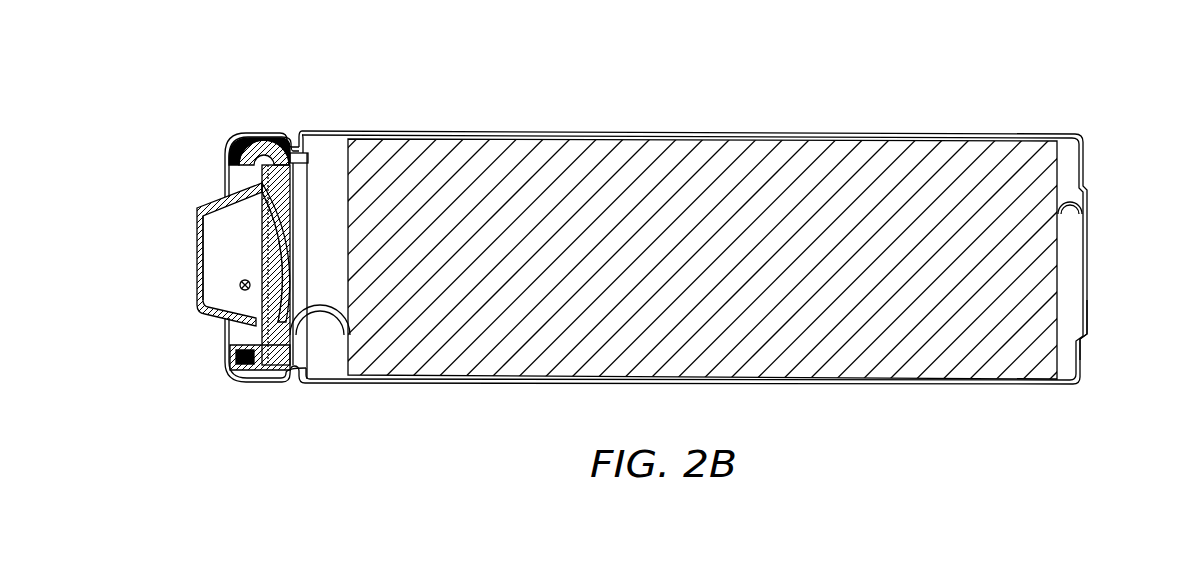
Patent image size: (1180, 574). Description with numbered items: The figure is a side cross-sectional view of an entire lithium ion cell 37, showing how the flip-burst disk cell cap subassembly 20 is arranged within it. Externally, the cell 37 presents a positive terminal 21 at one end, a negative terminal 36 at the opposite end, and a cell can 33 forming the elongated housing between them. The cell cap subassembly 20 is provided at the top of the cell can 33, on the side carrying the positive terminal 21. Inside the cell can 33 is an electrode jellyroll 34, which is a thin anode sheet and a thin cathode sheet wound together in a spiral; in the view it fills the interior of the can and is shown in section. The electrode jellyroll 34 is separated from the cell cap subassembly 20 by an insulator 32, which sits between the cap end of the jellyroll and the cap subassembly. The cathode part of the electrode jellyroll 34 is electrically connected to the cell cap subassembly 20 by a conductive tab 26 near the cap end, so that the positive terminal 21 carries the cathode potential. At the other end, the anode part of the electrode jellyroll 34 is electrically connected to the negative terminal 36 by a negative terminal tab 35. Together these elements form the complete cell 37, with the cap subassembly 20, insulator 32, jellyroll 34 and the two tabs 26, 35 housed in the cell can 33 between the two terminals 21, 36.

The cell cap subassembly 20 is at (215, 293).
The positive terminal 21 is at (197, 250).
The conductive tab 26 is at (343, 322).
The insulator 32 is at (307, 180).
The cell can 33 is at (553, 133).
The electrode jellyroll 34 is at (688, 160).
The negative terminal tab 35 is at (1072, 197).
The negative terminal 36 is at (1088, 318).
The lithium ion cell 37 is at (222, 100).